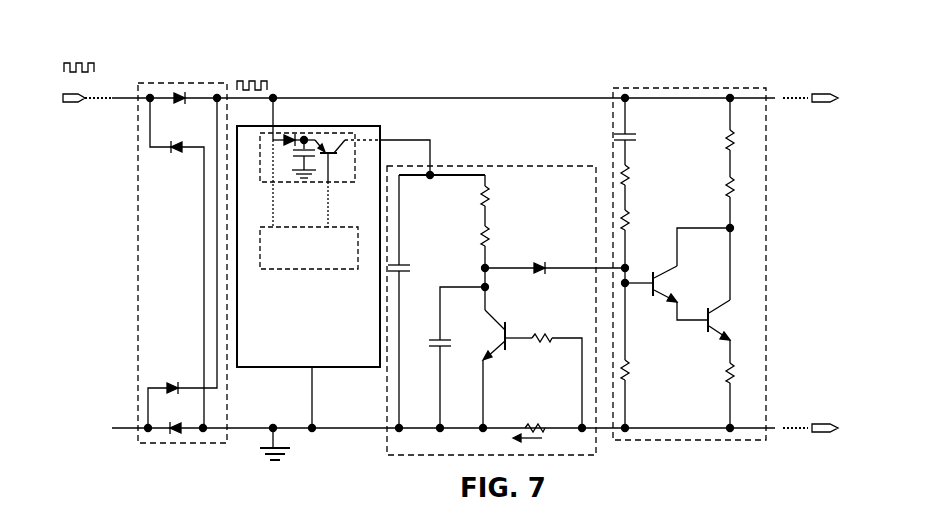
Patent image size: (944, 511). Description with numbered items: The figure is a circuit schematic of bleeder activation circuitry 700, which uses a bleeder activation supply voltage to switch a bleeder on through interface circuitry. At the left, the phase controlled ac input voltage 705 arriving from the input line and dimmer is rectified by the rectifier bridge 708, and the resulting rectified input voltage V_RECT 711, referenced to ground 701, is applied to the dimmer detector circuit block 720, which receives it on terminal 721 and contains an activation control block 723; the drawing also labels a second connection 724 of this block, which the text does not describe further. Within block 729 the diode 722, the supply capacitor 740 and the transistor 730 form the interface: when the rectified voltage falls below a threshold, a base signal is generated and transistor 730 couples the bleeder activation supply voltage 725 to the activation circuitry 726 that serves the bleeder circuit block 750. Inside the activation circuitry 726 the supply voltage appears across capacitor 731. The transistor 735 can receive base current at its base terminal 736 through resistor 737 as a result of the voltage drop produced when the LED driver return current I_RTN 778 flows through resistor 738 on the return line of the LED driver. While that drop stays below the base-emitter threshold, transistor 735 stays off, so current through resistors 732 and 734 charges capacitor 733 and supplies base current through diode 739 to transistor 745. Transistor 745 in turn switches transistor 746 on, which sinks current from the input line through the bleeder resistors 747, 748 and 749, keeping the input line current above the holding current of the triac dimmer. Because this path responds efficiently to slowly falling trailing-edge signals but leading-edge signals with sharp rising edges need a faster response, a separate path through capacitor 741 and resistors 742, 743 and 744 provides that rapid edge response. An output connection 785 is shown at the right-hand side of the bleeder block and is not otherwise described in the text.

The bleeder activation circuitry 700 is at (443, 229).
The phase controlled ac input voltage 705 is at (100, 86).
The rectifier bridge 708 is at (168, 87).
The rectified input voltage V_RECT 711 is at (242, 74).
The dimmer detector circuit block 720 is at (262, 368).
The supply capacitor C_supply 740 is at (317, 135).
The diode 722 is at (296, 132).
The transistor Q'8 730 is at (331, 138).
The block 729 is at (345, 137).
The bleeder activation supply voltage 725 is at (400, 132).
The terminal 721 is at (280, 226).
The control connection 724 is at (334, 226).
The activation control block 723 is at (312, 276).
The ground 701 is at (258, 452).
The activation circuitry 726 is at (526, 158).
The capacitor 731 is at (416, 266).
The resistor 732 is at (492, 198).
The resistor 734 is at (492, 239).
The diode D1 739 is at (544, 262).
The base terminal 736 is at (506, 326).
The transistor Q1 735 is at (484, 356).
The capacitor 733 is at (426, 336).
The resistor 737 is at (544, 330).
The resistor 738 is at (536, 416).
The LED driver return current I_RTN 778 is at (536, 452).
The bleeder circuit block 750 is at (738, 84).
The capacitor 741 is at (638, 134).
The resistor 742 is at (636, 178).
The resistor 743 is at (638, 224).
The resistor 744 is at (634, 370).
The transistor Q2 745 is at (680, 274).
The transistor Q3 746 is at (732, 312).
The bleeder resistor 747 is at (735, 144).
The bleeder resistor 748 is at (735, 192).
The bleeder resistor 749 is at (738, 380).
The output to regulated converter 785 is at (838, 110).